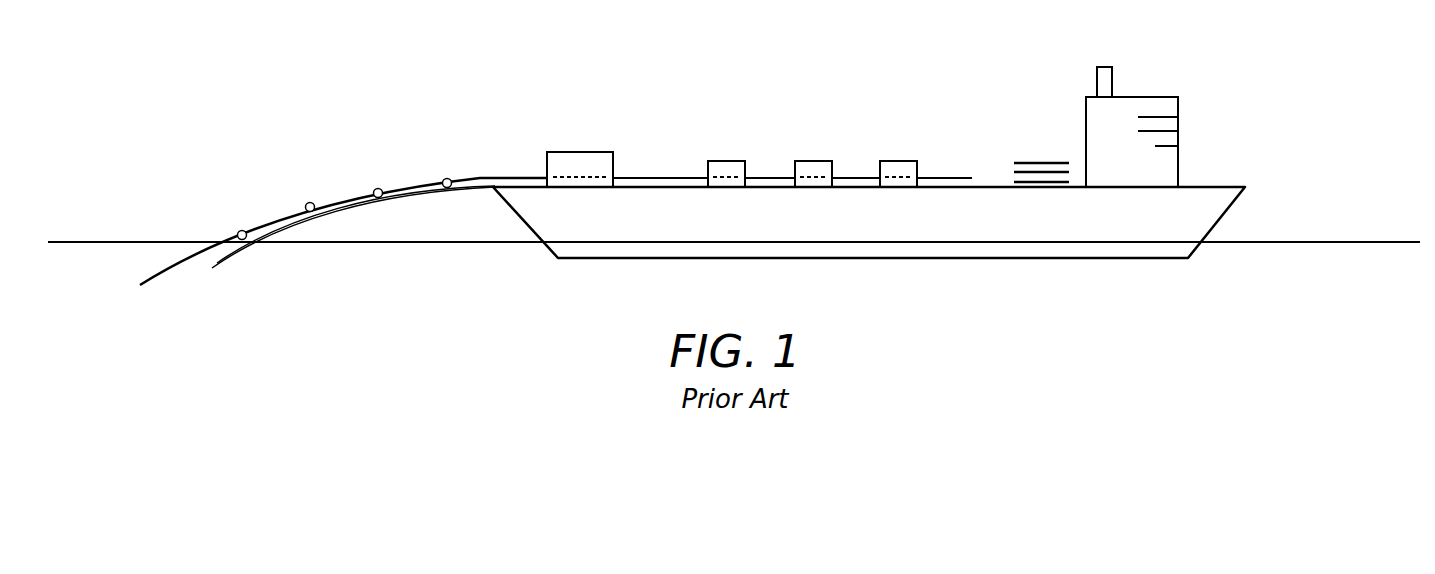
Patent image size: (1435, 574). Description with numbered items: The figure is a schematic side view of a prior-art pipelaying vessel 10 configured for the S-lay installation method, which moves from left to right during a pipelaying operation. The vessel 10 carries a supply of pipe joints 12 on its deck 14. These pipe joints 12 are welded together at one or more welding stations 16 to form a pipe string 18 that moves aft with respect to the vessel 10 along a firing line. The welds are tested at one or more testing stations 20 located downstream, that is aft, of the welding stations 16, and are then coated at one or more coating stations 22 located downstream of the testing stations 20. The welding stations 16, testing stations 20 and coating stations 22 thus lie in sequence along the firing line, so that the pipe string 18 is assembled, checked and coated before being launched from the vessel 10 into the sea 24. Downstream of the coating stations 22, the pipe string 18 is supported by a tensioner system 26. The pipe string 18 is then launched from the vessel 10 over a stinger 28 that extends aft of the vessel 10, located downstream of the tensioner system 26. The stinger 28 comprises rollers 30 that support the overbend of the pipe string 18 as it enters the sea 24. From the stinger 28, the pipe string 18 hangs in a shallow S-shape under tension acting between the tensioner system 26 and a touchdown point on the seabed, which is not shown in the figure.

The pipelaying vessel 10 is at (1210, 57).
The pipe joints 12 is at (1045, 163).
The deck 14 is at (990, 187).
The welding stations 16 is at (900, 161).
The pipe string 18 is at (663, 177).
The testing stations 20 is at (813, 161).
The coating stations 22 is at (728, 161).
The sea 24 is at (1357, 242).
The tensioner system 26 is at (580, 152).
The stinger 28 is at (340, 210).
The rollers 30 is at (311, 203).